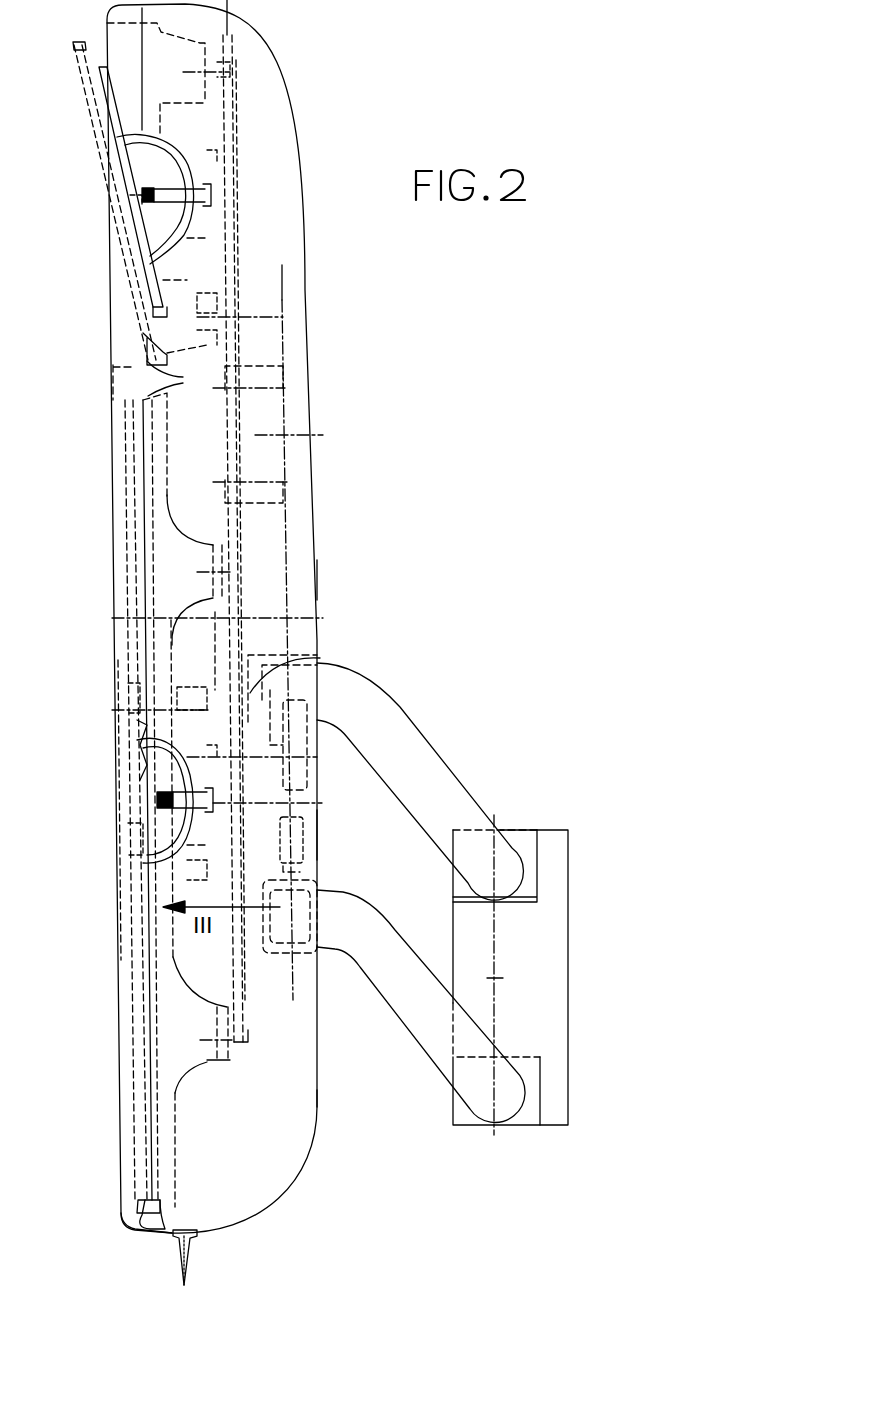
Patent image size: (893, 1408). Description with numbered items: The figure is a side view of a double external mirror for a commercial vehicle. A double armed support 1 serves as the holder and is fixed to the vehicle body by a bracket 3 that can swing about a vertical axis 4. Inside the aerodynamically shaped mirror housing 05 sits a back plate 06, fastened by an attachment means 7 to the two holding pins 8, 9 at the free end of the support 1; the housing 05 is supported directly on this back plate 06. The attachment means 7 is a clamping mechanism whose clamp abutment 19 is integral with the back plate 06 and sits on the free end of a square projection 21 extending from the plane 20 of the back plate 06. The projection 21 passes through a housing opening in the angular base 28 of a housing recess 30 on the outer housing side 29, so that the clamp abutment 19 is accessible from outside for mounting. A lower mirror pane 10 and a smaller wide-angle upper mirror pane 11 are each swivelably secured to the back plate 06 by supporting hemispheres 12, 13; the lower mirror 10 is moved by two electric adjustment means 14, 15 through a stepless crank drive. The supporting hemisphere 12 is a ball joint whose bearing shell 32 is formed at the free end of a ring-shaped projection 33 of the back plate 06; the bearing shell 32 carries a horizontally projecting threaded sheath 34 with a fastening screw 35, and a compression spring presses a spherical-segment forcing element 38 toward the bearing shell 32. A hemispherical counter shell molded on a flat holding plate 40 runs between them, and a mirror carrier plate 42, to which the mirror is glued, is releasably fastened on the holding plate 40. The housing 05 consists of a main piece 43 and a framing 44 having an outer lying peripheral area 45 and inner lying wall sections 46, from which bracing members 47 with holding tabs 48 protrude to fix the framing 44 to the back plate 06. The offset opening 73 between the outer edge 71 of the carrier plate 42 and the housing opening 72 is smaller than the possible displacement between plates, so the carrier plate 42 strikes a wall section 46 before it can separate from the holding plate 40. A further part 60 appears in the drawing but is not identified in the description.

The double armed support 1 is at (447, 748).
The bracket 3 is at (552, 978).
The vertical axis 4 is at (494, 930).
The mirror housing 05 is at (318, 347).
The back plate 06 is at (235, 277).
The attachment means 7 is at (283, 787).
The holding pin 8 is at (297, 758).
The holding pin 9 is at (300, 852).
The lower mirror pane 10 is at (130, 855).
The upper mirror pane 11 is at (142, 198).
The supporting hemisphere 12 is at (187, 850).
The supporting hemisphere 13 is at (181, 249).
The adjustment means 14 is at (200, 733).
The adjustment means 15 is at (200, 650).
The clamp abutment 19 is at (283, 812).
The plane of the back plate 20 is at (228, 8).
The square projection 21 is at (300, 883).
The angular base 28 is at (335, 658).
The outer housing side 29 is at (317, 565).
The housing recess 30 is at (318, 833).
The bearing shell 32 is at (165, 211).
The ring-shaped projection 33 is at (207, 155).
The threaded sheath 34 is at (160, 218).
The fastening screw 35 is at (150, 190).
The forcing element 38 is at (167, 170).
The holding plate 40 is at (163, 295).
The mirror carrier plate 42 is at (137, 295).
The main piece 43 is at (308, 1126).
The framing 44 is at (128, 1123).
The outer lying peripheral area 45 is at (112, 7).
The inner lying wall section 46 is at (112, 27).
The bracing member 47 is at (193, 60).
The holding tab 48 is at (212, 87).
The blade 60 is at (137, 265).
The outer edge of the mirror carrier plate 71 is at (147, 402).
The housing opening 72 is at (128, 332).
The offset opening 73 is at (143, 393).